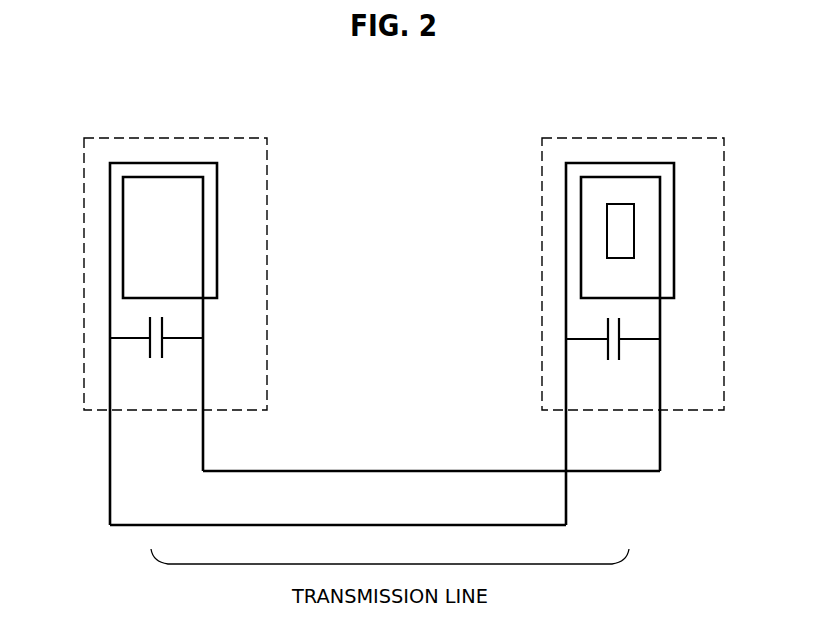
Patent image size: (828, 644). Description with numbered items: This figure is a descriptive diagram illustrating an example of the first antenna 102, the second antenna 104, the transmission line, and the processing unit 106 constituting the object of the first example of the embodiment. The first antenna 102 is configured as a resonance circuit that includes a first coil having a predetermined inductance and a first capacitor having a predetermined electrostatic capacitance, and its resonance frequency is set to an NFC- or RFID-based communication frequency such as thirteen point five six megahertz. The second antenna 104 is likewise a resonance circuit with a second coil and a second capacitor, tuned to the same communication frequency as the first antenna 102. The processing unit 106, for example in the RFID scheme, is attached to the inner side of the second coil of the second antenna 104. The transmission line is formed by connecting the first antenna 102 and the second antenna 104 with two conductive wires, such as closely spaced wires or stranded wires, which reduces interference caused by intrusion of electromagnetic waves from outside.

The first antenna 102 is at (175, 137).
The second antenna 104 is at (632, 137).
The processing unit 106 is at (607, 231).